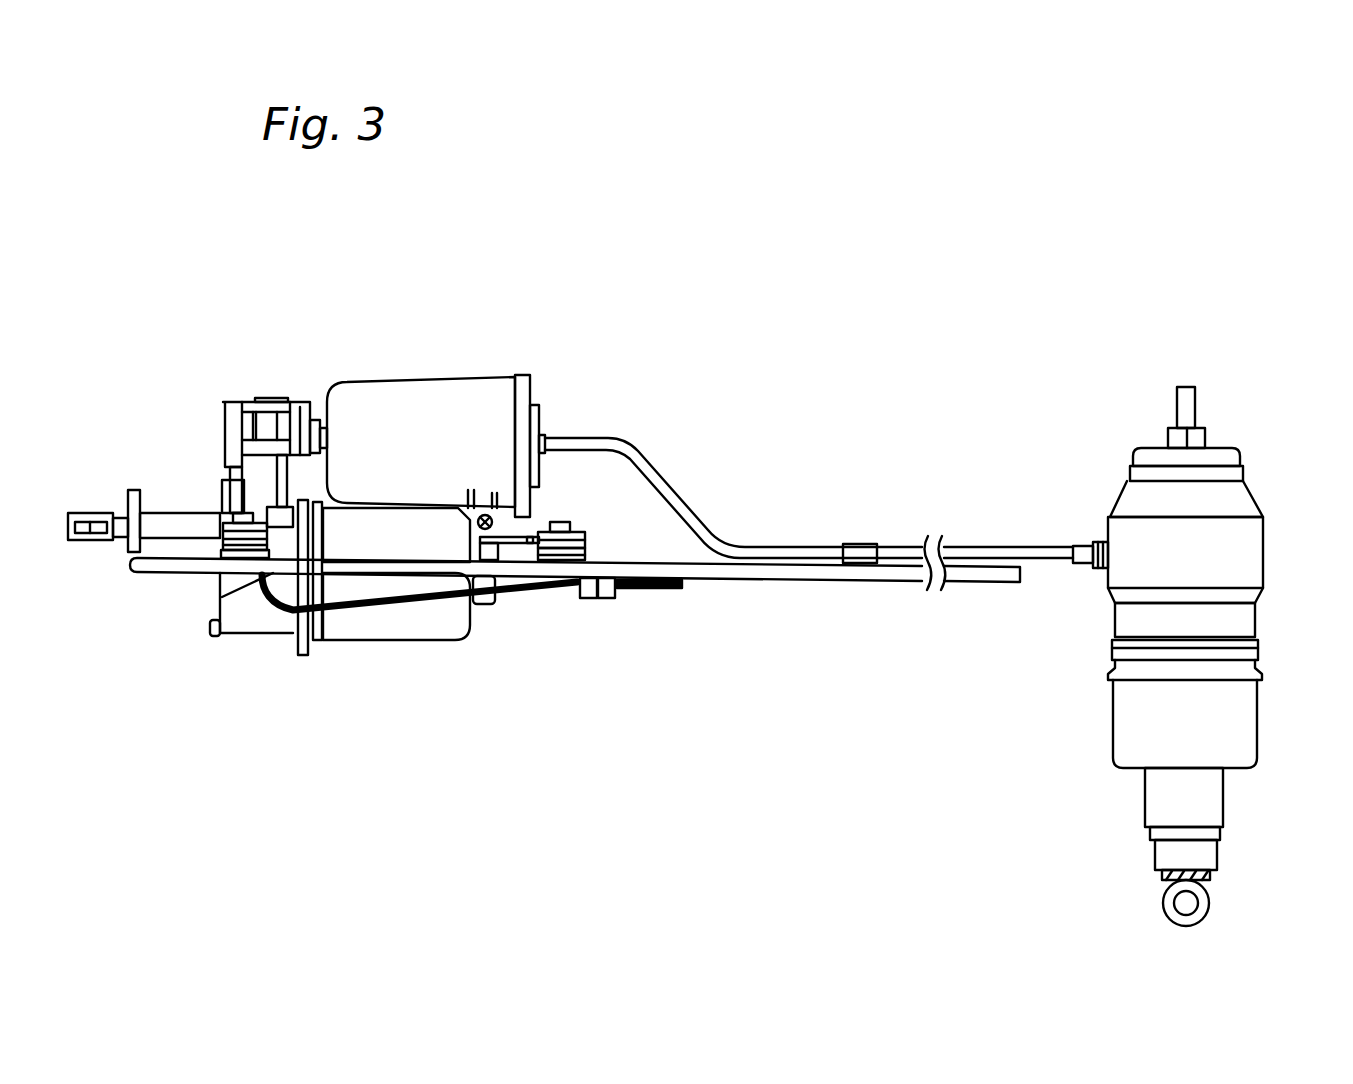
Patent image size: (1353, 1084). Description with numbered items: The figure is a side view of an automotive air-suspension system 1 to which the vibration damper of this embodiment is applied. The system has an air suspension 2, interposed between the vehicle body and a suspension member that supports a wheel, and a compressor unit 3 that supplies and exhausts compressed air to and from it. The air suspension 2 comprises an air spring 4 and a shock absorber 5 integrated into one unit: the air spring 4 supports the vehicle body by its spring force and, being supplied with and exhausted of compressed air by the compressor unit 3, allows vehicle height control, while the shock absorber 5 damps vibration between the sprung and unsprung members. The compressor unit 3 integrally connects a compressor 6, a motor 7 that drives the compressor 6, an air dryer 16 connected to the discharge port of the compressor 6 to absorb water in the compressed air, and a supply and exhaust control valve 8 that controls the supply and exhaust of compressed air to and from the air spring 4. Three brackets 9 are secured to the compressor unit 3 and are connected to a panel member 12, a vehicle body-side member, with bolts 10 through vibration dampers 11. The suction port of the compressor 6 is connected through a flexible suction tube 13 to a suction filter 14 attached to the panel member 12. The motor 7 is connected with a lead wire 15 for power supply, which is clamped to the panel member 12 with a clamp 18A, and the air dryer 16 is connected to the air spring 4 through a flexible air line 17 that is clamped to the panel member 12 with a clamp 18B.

The air-suspension system 1 is at (804, 360).
The air suspension 2 is at (1224, 428).
The compressor unit 3 is at (405, 354).
The air spring 4 is at (1252, 552).
The shock absorber 5 is at (1217, 798).
The compressor 6 is at (245, 470).
The motor 7 is at (367, 633).
The supply and exhaust control valve 8 is at (305, 400).
The bracket 9 is at (217, 543).
The bolt 10 is at (228, 492).
The vibration damper 11 is at (222, 520).
The panel member 12 is at (767, 580).
The flexible suction tube 13 is at (170, 528).
The suction filter 14 is at (93, 510).
The lead wire 15 is at (423, 607).
The air dryer 16 is at (463, 392).
The flexible air line 17 is at (682, 510).
The clamp 18A is at (588, 600).
The clamp 18B is at (860, 544).